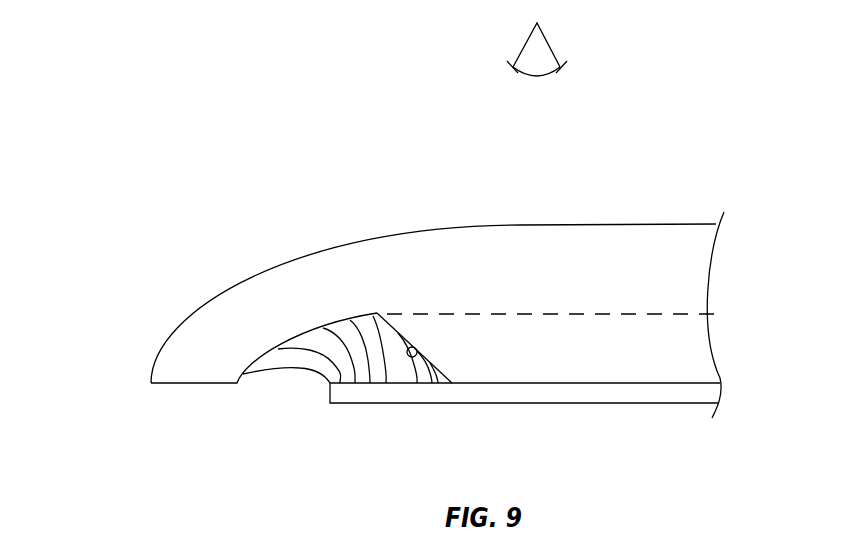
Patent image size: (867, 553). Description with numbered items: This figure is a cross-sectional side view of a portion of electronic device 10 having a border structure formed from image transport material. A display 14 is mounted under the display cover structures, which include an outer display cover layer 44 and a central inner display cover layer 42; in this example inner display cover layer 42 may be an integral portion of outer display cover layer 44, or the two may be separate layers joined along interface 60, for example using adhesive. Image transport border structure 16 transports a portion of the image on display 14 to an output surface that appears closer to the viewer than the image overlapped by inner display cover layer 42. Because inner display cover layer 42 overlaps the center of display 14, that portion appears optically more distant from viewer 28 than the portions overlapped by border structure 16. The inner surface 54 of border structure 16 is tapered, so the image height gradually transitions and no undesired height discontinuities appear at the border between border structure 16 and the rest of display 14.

The electronic device 10 is at (713, 148).
The display 14 is at (587, 394).
The image transport border structure 16 is at (289, 393).
The viewer 28 is at (547, 40).
The inner display cover layer 42 is at (698, 346).
The outer display cover layer 44 is at (585, 240).
The inner surface 54 is at (417, 357).
The interface 60 is at (653, 311).